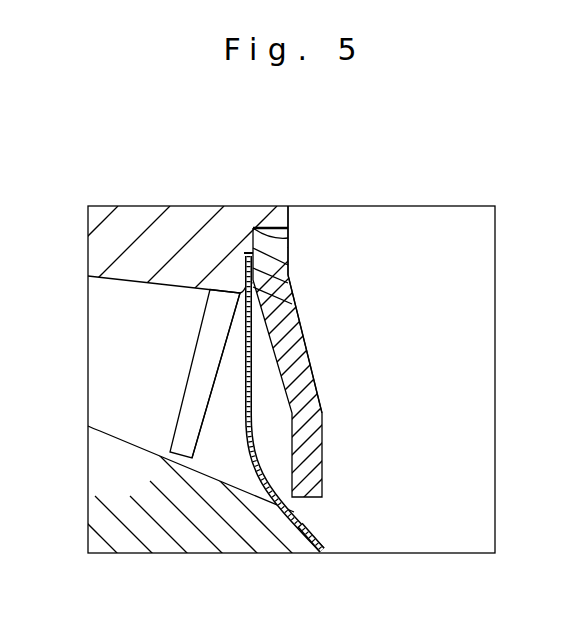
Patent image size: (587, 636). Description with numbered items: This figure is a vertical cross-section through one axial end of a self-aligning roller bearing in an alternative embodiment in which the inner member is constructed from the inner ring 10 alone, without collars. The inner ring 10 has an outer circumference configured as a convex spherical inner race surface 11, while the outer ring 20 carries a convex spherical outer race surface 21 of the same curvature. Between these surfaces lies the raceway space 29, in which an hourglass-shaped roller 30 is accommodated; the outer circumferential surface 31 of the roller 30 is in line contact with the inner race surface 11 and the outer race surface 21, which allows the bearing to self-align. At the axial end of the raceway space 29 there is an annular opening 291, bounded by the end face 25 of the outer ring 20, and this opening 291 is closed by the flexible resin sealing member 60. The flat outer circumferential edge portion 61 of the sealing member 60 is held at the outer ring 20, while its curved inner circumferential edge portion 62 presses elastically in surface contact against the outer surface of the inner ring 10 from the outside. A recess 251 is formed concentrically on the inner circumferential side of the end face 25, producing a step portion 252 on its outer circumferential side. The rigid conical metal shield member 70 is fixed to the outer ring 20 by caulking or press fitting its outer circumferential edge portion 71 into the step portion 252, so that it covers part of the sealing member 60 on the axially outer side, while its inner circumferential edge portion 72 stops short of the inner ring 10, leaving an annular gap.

The inner ring 10 is at (102, 518).
The inner race surface 11 is at (100, 427).
The outer ring 20 is at (102, 240).
The outer race surface 21 is at (110, 278).
The end face 25 is at (292, 206).
The recess 251 is at (290, 300).
The step portion 252 is at (270, 238).
The raceway space 29 is at (210, 265).
The opening 291 is at (235, 393).
The roller 30 is at (105, 352).
The outer circumferential surface 31 is at (162, 262).
The sealing member 60 is at (258, 477).
The outer circumferential edge portion 61 is at (250, 261).
The inner circumferential edge portion 62 is at (313, 521).
The metal shield member 70 is at (318, 362).
The outer circumferential edge portion 71 is at (277, 237).
The inner circumferential edge portion 72 is at (325, 442).